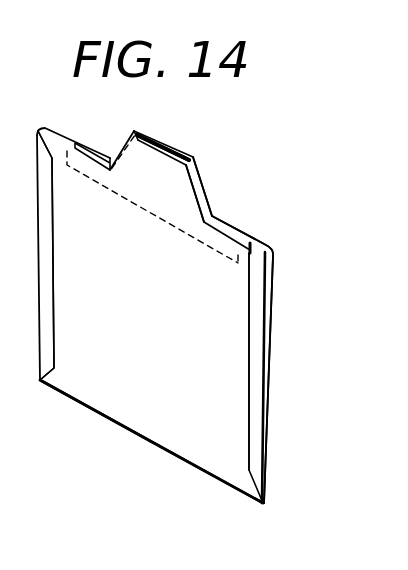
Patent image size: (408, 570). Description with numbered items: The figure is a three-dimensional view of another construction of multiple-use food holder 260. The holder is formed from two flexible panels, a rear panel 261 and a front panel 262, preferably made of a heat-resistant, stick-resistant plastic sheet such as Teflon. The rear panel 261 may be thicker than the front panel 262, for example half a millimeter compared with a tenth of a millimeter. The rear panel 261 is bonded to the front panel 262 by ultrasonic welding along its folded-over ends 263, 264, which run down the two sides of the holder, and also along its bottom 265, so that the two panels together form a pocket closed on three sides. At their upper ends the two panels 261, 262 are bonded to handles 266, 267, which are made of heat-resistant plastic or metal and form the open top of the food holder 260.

The multiple-use food holder 260 is at (280, 213).
The rear panel 261 is at (266, 246).
The front panel 262 is at (218, 472).
The folded-over end 263 is at (57, 302).
The folded-over end 264 is at (250, 357).
The bottom 265 is at (121, 427).
The handle 266 is at (193, 153).
The handle 267 is at (183, 189).